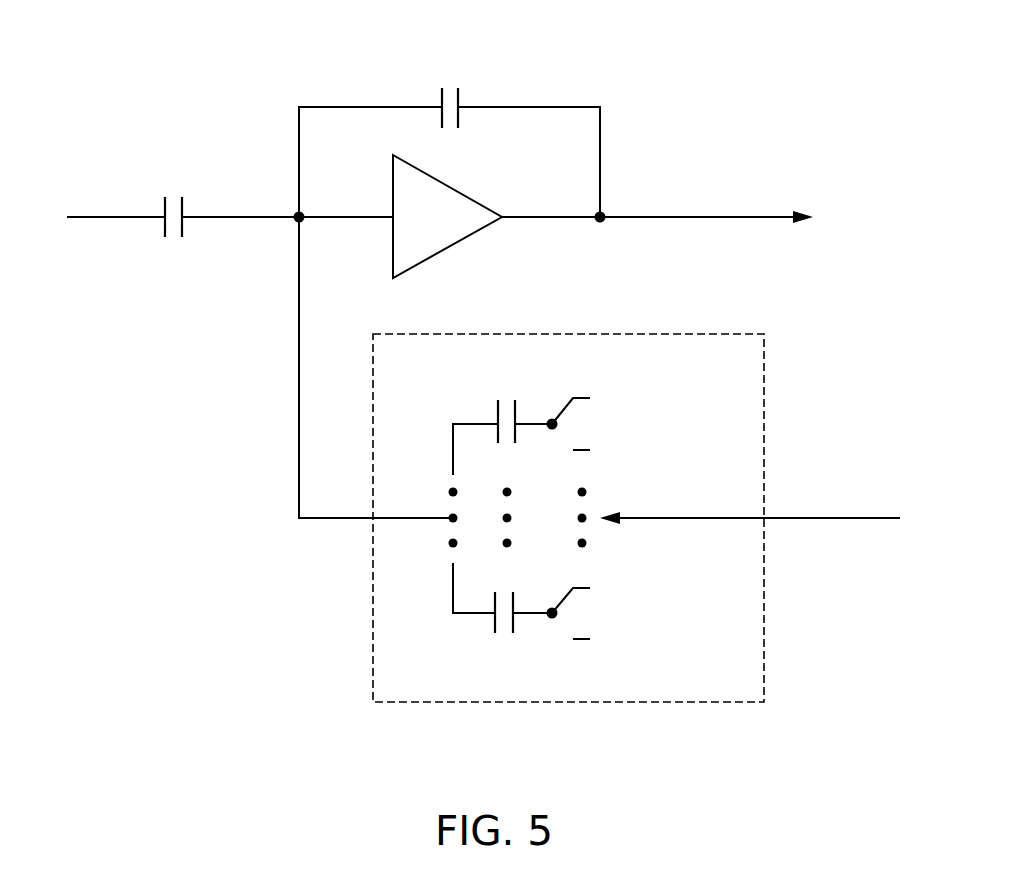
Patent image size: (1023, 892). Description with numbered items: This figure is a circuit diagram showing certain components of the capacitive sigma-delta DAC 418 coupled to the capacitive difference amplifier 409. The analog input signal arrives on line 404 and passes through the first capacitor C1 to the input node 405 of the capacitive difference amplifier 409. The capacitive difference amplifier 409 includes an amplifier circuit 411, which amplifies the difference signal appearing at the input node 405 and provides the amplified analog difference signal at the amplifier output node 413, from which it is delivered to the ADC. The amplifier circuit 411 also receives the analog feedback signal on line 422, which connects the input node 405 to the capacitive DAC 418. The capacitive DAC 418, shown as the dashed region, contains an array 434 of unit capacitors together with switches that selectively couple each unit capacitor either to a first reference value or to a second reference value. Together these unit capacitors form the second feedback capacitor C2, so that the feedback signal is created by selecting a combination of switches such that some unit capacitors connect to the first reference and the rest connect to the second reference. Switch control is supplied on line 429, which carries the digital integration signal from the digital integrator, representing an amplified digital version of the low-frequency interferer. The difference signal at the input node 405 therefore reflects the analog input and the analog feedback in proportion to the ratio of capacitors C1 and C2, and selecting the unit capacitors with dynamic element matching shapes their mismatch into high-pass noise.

The line 404 is at (118, 215).
The input node 405 is at (297, 214).
The capacitive difference amplifier 409 is at (580, 83).
The amplifier circuit 411 is at (452, 186).
The amplifier output node 413 is at (668, 213).
The capacitive DAC 418 is at (473, 705).
The line 422 is at (298, 370).
The line 429 is at (802, 516).
The array of unit capacitors 434 is at (421, 429).
The first capacitor C1 is at (229, 203).
The second feedback capacitor C2 is at (471, 630).